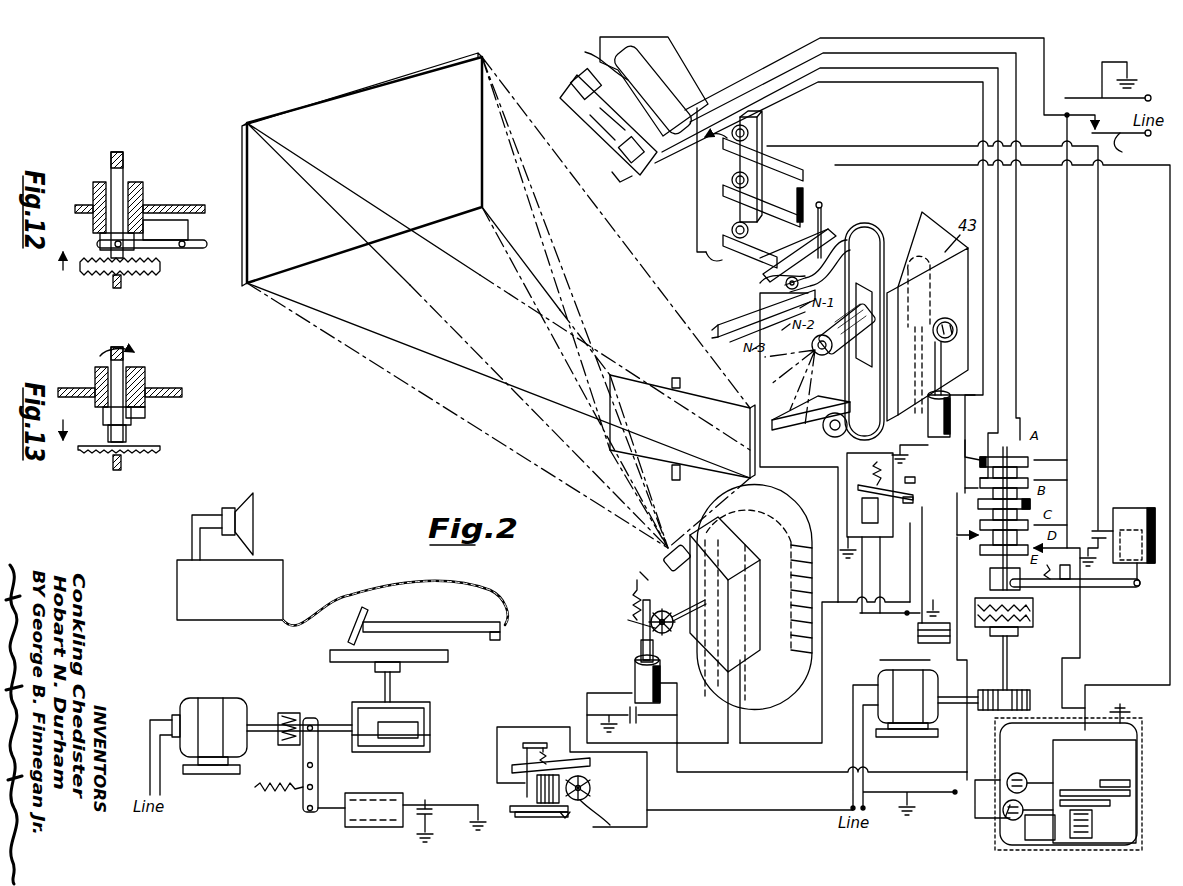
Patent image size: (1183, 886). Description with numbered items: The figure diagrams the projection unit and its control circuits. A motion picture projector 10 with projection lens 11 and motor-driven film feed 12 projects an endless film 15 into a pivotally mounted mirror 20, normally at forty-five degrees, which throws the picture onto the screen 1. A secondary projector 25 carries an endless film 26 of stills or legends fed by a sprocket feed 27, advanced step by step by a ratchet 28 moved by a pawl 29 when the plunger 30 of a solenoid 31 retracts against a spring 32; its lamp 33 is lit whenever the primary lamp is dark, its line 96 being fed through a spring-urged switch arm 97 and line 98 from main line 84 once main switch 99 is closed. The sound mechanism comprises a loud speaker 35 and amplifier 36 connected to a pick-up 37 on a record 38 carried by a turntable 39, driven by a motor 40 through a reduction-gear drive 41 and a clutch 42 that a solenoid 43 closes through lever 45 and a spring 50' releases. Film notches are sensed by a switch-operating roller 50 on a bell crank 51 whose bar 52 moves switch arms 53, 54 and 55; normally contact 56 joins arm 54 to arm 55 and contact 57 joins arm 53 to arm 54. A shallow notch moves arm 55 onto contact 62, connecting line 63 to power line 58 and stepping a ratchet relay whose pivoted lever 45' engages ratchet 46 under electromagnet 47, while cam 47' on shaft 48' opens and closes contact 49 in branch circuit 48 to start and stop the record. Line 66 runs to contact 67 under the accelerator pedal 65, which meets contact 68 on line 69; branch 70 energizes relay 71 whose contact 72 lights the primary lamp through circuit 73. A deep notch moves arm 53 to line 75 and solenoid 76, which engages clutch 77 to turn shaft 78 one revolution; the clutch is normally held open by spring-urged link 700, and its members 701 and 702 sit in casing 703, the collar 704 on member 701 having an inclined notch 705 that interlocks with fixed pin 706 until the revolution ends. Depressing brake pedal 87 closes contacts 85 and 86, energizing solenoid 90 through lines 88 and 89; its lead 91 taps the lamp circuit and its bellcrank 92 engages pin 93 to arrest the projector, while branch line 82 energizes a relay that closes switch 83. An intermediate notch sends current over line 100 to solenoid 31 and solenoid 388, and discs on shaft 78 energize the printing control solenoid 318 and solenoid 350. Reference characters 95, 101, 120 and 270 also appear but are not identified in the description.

In FIG. 2, the screen 1 is at (347, 101).
In FIG. 2, the motion picture projector 10 is at (932, 222).
In FIG. 2, the projection lens 11 is at (835, 352).
In FIG. 2, the motor-driven film feed 12 is at (825, 432).
In FIG. 2, the endless film 15 is at (862, 232).
In FIG. 2, the pivotally mounted mirror 20 is at (690, 400).
In FIG. 2, the screen pivot 120 is at (680, 478).
In FIG. 2, the secondary projector 25 is at (750, 660).
In FIG. 2, the endless film 26 is at (786, 500).
In FIG. 2, the sprocket feed 27 is at (660, 566).
In FIG. 2, the ratchet 28 is at (672, 632).
In FIG. 2, the pawl 29 is at (640, 630).
In FIG. 2, the plunger 30 is at (633, 670).
In FIG. 2, the solenoid 31 is at (662, 690).
In FIG. 2, the spring 32 is at (633, 598).
In FIG. 2, the lamp 33 is at (733, 608).
In FIG. 2, the loud speaker 35 is at (224, 506).
In FIG. 2, the amplifier 36 is at (177, 594).
In FIG. 2, the pick-up 37 is at (417, 626).
In FIG. 2, the record 38 is at (347, 643).
In FIG. 2, the turntable 39 is at (438, 662).
In FIG. 2, the motor 40 is at (188, 708).
In FIG. 2, the reduction-gear drive 41 is at (430, 732).
In FIG. 2, the clutch 42 is at (302, 718).
In FIG. 2, the solenoid 43 is at (385, 794).
In FIG. 2, the lever 45 is at (321, 765).
In FIG. 2, the pivoted lever 45' is at (573, 770).
In FIG. 2, the ratchet 46 is at (592, 790).
In FIG. 2, the electromagnet 47 is at (567, 810).
In FIG. 2, the cam 47' is at (570, 815).
In FIG. 2, the branch circuit 48 is at (558, 786).
In FIG. 2, the shaft 48' is at (610, 823).
In FIG. 2, the contact 49 is at (572, 818).
In FIG. 2, the switch-operating roller 50 is at (776, 287).
In FIG. 2, the spring 50' is at (265, 802).
In FIG. 2, the bell crank 51 is at (825, 206).
In FIG. 2, the roller-engaging bar 52 is at (758, 115).
In FIG. 2, the switch arm 53 is at (727, 140).
In FIG. 2, the switch arm 54 is at (727, 198).
In FIG. 2, the switch arm 55 is at (722, 262).
In FIG. 2, the contact 56 is at (776, 248).
In FIG. 2, the contact 57 is at (805, 195).
In FIG. 2, the power line 58 is at (1050, 66).
In FIG. 2, the contact 62 is at (760, 293).
In FIG. 2, the line 63 is at (710, 812).
In FIG. 2, the pedal 65 is at (672, 85).
In FIG. 2, the line 66 is at (680, 47).
In FIG. 2, the contact 67 is at (586, 52).
In FIG. 2, the contact 68 is at (596, 86).
In FIG. 2, the line 69 is at (983, 92).
In FIG. 2, the branch 70 is at (850, 458).
In FIG. 2, the relay 71 is at (870, 522).
In FIG. 2, the contact 72 is at (915, 478).
In FIG. 2, the circuit 73 is at (915, 448).
In FIG. 2, the line 75 is at (893, 146).
In FIG. 2, the solenoid 76 is at (1140, 508).
In FIG. 2, the clutch 77 is at (1033, 606).
In FIG. 2, the shaft 78 is at (990, 576).
In FIG. 2, the branch line 82 is at (924, 572).
In FIG. 2, the switch 83 is at (940, 600).
In FIG. 2, the main line 84 is at (858, 672).
In FIG. 2, the contact 85 is at (640, 155).
In FIG. 2, the contact 86 is at (622, 181).
In FIG. 2, the brake pedal 87 is at (580, 124).
In FIG. 2, the line 88 is at (1067, 298).
In FIG. 2, the line 89 is at (998, 225).
In FIG. 2, the solenoid 90 is at (965, 387).
In FIG. 2, the lead 91 is at (938, 437).
In FIG. 2, the bellcrank 92 is at (942, 360).
In FIG. 2, the pin 93 is at (950, 318).
In FIG. 2, the conductor 95 is at (712, 748).
In FIG. 2, the line 96 is at (804, 748).
In FIG. 2, the switch arm 97 is at (876, 482).
In FIG. 2, the line 98 is at (876, 628).
In FIG. 2, the main switch 99 is at (1130, 146).
In FIG. 2, the line 100 is at (1168, 240).
In FIG. 2, the contact arm 101 is at (727, 240).
In FIG. 2, the control unit 270 is at (1100, 718).
In FIG. 2, the control solenoid 318 is at (1066, 795).
In FIG. 2, the solenoid 350 is at (1008, 822).
In FIG. 2, the solenoid 388 is at (1012, 774).
In FIG. 2, the spring-urged link 700 is at (1100, 590).
In FIG. 12, the slidable clutch member 701 is at (160, 273).
In FIG. 2, the clutch member 702 is at (1033, 628).
In FIG. 12, the stationary casing 703 is at (100, 236).
In FIG. 13, the collar 704 is at (140, 412).
In FIG. 13, the inclined notch 705 is at (104, 416).
In FIG. 12, the fixed pin 706 is at (160, 220).